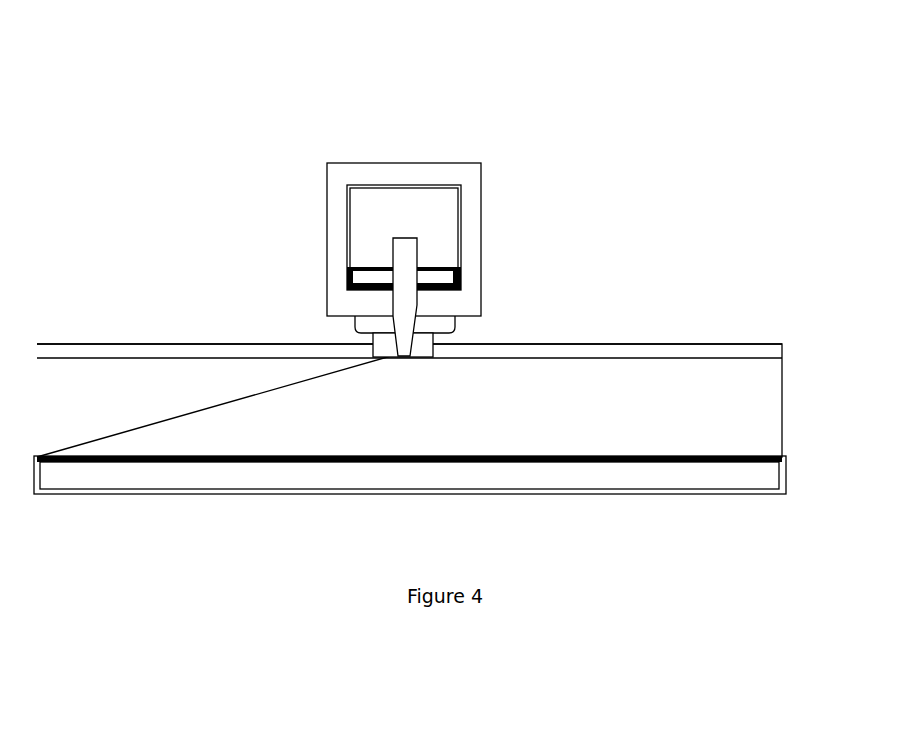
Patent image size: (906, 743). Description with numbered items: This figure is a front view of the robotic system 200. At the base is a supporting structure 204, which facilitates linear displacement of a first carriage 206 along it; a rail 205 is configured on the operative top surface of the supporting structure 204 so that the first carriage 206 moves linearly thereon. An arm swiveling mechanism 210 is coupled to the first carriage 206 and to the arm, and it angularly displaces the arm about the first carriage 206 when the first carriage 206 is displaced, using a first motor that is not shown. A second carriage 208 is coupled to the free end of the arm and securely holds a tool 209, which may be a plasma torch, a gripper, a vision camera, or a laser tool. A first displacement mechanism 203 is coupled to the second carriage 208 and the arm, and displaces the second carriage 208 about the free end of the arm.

The robotic system 200 is at (657, 65).
The first displacement mechanism 203 is at (343, 295).
The supporting structure 204 is at (723, 408).
The rail 205 is at (712, 345).
The first carriage 206 is at (377, 343).
The second carriage 208 is at (367, 268).
The tool 209 is at (402, 339).
The arm swiveling mechanism 210 is at (440, 322).